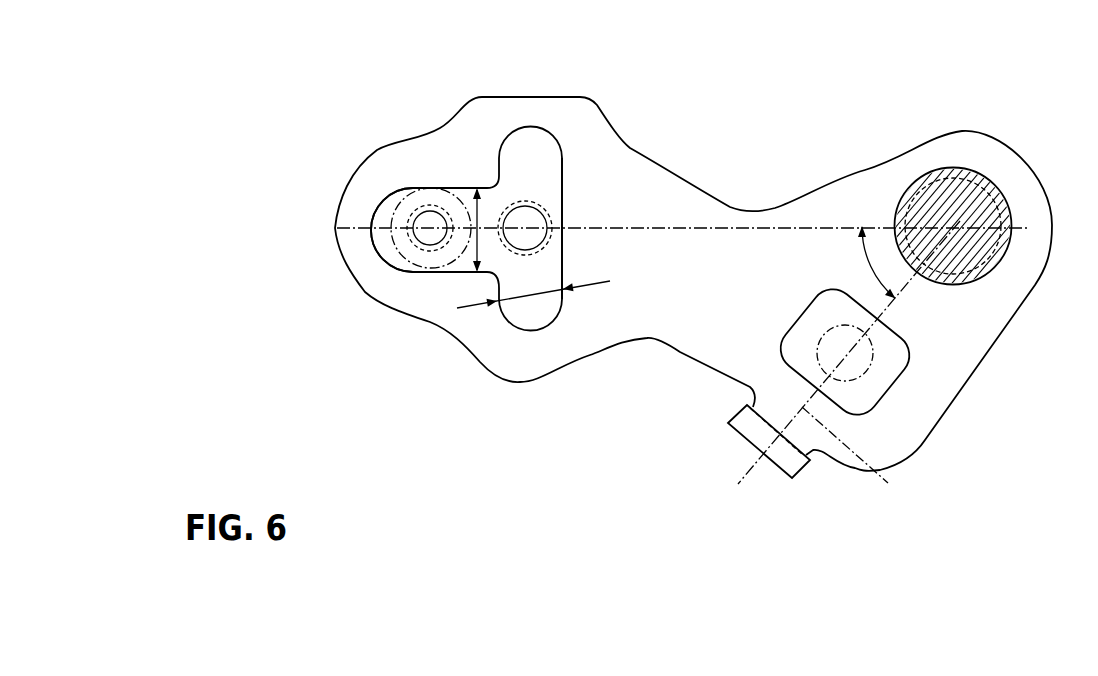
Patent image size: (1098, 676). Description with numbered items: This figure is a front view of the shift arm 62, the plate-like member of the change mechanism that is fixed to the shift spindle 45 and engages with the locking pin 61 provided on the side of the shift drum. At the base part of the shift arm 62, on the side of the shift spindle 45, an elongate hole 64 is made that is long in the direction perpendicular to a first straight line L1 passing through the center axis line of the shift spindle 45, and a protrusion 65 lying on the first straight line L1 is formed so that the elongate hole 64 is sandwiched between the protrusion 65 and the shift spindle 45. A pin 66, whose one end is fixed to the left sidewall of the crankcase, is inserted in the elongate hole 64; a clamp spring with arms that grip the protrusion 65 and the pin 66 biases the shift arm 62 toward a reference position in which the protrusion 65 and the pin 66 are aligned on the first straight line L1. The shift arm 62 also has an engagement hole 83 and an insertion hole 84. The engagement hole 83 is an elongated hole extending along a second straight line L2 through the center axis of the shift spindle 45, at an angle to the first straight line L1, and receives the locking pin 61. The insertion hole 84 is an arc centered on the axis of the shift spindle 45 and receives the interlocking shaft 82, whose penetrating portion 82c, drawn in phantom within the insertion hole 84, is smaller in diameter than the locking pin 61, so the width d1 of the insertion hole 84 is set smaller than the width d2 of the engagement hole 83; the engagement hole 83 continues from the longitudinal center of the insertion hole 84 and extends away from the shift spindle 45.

The shift spindle 45 is at (965, 190).
The locking pin 61 is at (430, 250).
The shift arm 62 is at (752, 217).
The elongate hole 64 is at (893, 360).
The protrusion 65 is at (755, 430).
The pin 66 is at (817, 343).
The interlocking shaft 82 is at (535, 182).
The circular hole 82c is at (513, 204).
The engagement hole 83 is at (424, 193).
The insertion hole 84 is at (552, 165).
The width of the insertion hole d1 is at (532, 293).
The width of the engagement hole d2 is at (473, 240).
The first straight line L1 is at (849, 364).
The second straight line L2 is at (685, 228).